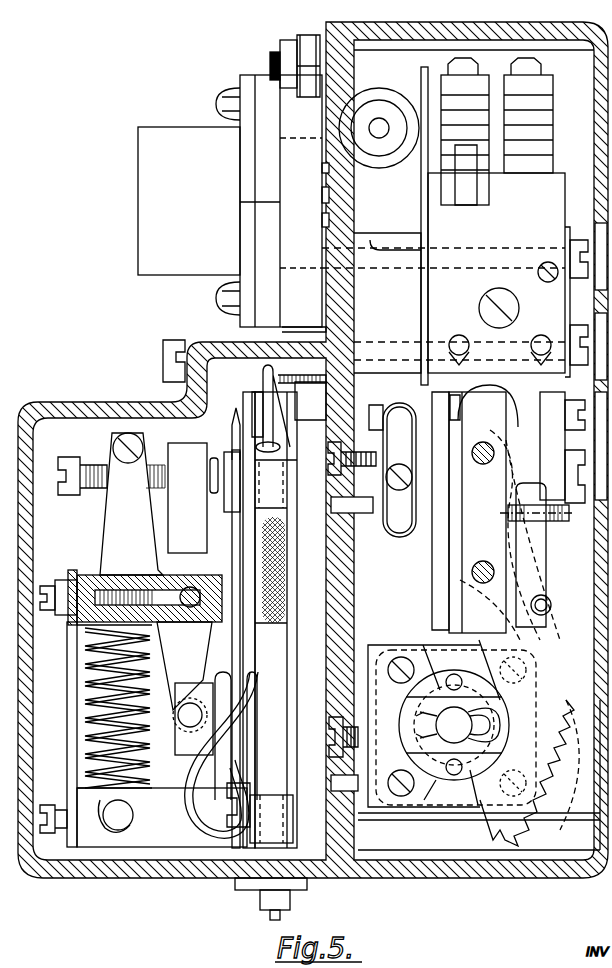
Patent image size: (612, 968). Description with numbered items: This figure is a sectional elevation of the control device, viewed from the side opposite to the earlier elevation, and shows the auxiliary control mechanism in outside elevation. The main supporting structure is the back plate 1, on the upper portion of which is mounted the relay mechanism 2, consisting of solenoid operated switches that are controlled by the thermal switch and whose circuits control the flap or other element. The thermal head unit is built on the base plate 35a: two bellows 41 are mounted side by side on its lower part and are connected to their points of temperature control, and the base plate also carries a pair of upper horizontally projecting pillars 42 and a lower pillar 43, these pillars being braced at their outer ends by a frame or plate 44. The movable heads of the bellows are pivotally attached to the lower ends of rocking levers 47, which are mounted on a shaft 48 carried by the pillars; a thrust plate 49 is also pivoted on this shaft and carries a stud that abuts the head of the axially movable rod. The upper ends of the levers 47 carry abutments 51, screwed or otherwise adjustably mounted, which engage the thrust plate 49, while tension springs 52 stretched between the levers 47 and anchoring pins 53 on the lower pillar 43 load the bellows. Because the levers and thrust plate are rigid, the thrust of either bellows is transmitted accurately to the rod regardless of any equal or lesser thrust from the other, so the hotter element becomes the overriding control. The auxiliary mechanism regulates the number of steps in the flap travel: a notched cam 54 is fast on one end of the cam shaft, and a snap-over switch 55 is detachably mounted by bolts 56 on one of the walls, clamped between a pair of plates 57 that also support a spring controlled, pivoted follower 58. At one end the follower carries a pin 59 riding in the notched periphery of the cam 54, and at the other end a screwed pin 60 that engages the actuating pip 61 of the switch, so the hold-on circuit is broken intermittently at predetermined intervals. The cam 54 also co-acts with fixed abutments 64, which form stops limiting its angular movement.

The back plate 1 is at (340, 372).
The relay mechanism 2 is at (455, 221).
The base plate 35a is at (313, 822).
The bellows 41 is at (245, 820).
The upper pillars 42 is at (95, 580).
The lower pillar 43 is at (100, 860).
The frame or plate 44 is at (72, 704).
The rocking levers 47 is at (115, 518).
The shaft 48 is at (180, 623).
The thrust plate 49 is at (180, 455).
The abutments 51 is at (100, 465).
The tension springs 52 is at (95, 758).
The anchoring pins 53 is at (121, 830).
The notched cam 54 is at (513, 790).
The snap-over switch 55 is at (476, 427).
The bolts 56 is at (470, 572).
The plates 57 is at (548, 590).
The follower 58 is at (548, 640).
The pin 59 is at (568, 765).
The screwed pin 60 is at (566, 516).
The actuating pip 61 is at (508, 487).
The fixed abutments 64 is at (460, 690).